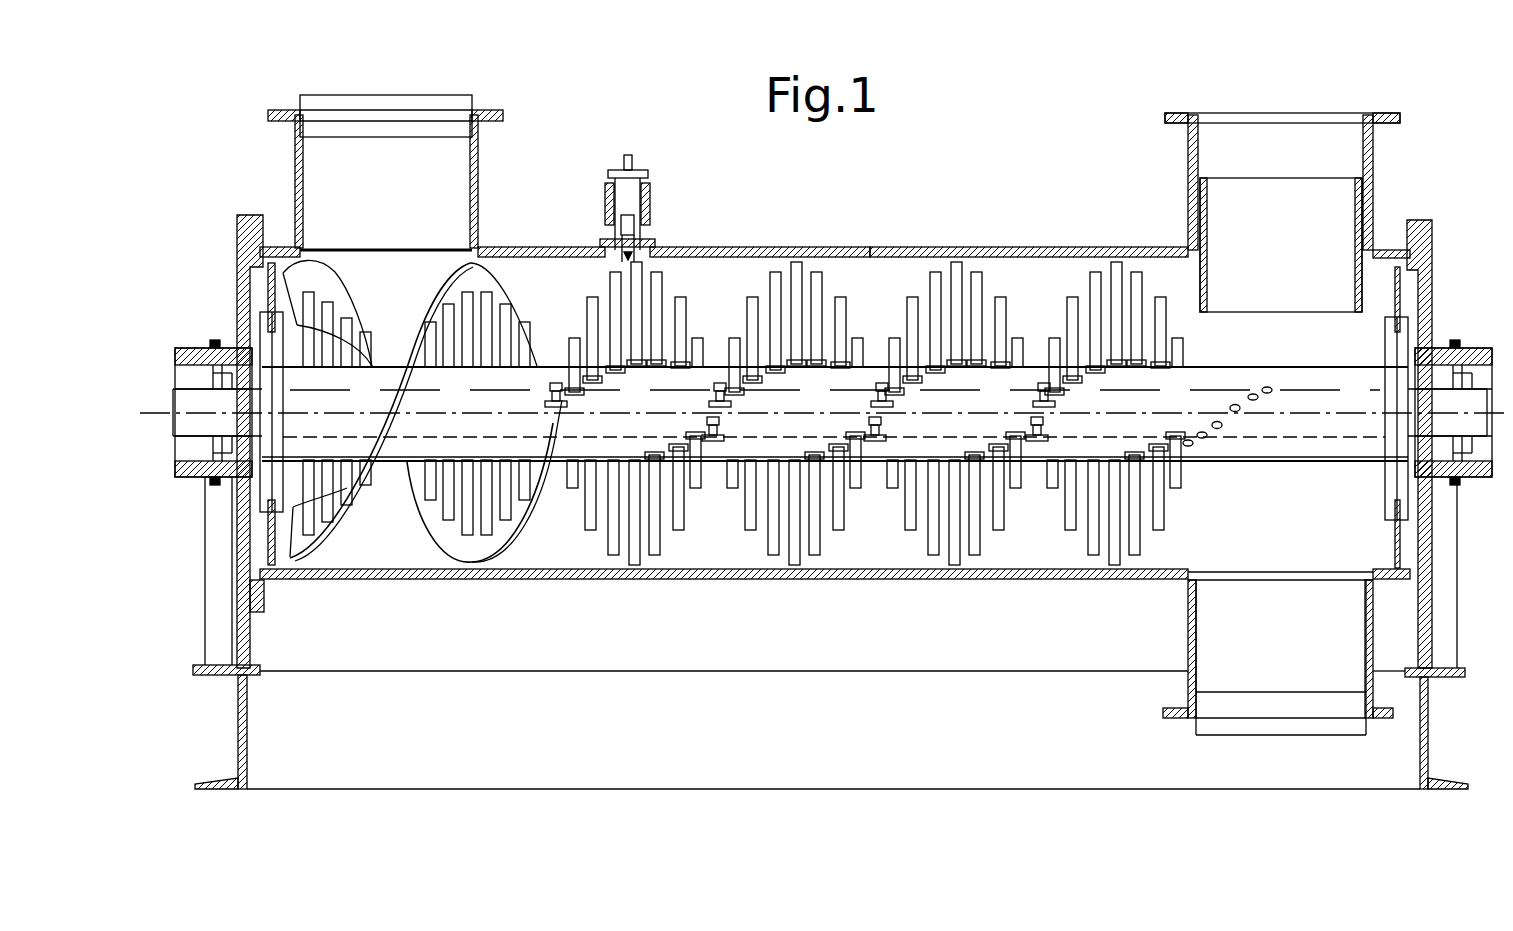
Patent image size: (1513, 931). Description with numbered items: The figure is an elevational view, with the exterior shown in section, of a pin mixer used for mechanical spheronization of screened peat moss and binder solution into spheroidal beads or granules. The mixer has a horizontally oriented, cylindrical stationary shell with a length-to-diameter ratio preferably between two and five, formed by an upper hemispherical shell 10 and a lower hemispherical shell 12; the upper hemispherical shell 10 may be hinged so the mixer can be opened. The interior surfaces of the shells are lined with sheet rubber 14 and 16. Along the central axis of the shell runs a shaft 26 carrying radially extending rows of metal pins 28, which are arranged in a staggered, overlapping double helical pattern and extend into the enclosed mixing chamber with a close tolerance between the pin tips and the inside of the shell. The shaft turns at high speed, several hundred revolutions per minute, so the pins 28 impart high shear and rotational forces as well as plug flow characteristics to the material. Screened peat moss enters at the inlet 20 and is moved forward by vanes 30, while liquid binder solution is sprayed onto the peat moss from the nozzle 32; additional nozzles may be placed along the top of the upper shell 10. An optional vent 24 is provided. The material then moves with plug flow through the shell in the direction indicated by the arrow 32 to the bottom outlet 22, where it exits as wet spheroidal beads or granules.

The upper hemispherical shell 10 is at (864, 250).
The lower hemispherical shell 12 is at (716, 582).
The sheet rubber 14 is at (1025, 268).
The sheet rubber 16 is at (862, 562).
The inlet 20 is at (387, 96).
The bottom outlet 22 is at (1285, 735).
The vent 24 is at (1285, 112).
The shaft 26 is at (1338, 368).
The pins 28 is at (782, 283).
The vanes 30 is at (505, 272).
The nozzle 32 is at (650, 212).